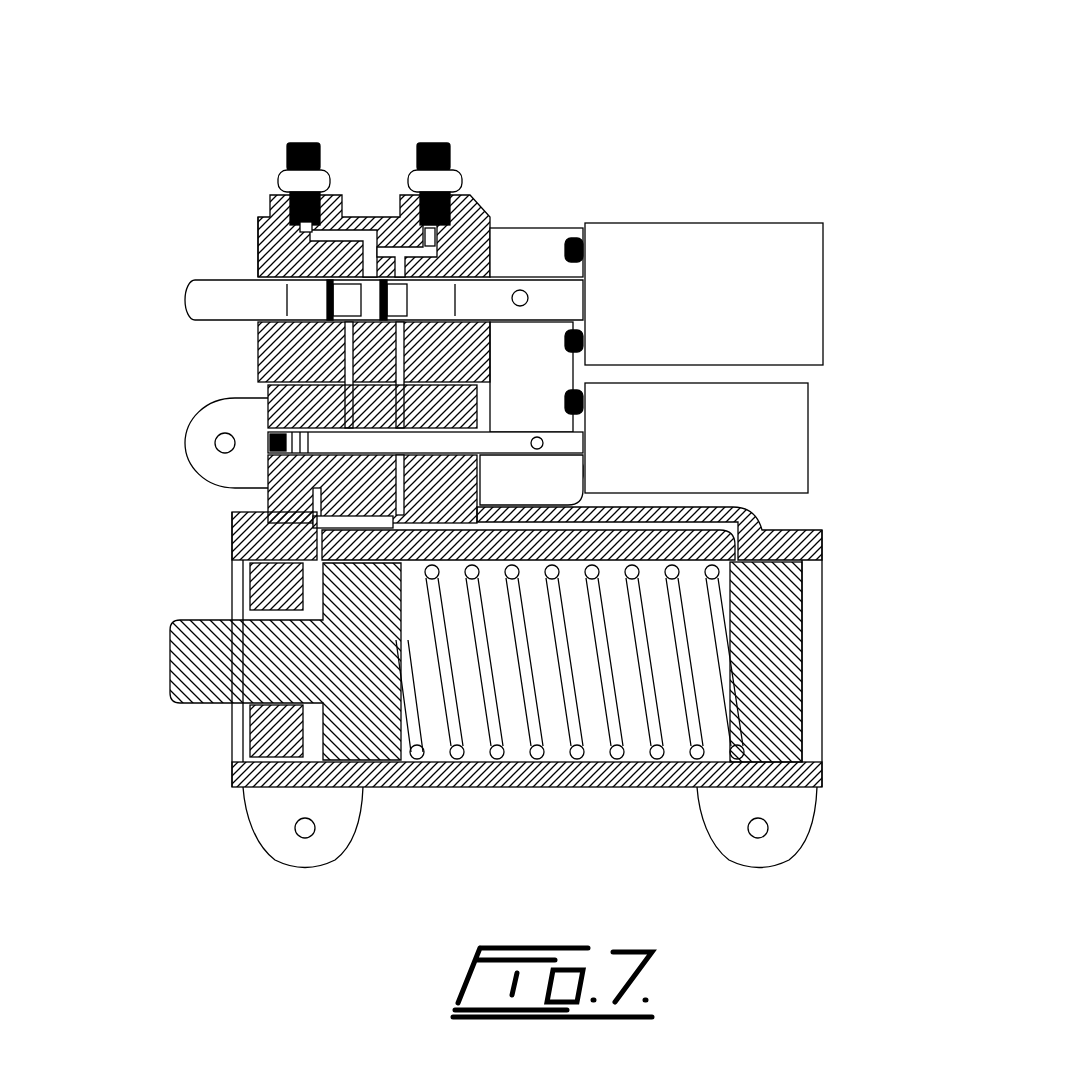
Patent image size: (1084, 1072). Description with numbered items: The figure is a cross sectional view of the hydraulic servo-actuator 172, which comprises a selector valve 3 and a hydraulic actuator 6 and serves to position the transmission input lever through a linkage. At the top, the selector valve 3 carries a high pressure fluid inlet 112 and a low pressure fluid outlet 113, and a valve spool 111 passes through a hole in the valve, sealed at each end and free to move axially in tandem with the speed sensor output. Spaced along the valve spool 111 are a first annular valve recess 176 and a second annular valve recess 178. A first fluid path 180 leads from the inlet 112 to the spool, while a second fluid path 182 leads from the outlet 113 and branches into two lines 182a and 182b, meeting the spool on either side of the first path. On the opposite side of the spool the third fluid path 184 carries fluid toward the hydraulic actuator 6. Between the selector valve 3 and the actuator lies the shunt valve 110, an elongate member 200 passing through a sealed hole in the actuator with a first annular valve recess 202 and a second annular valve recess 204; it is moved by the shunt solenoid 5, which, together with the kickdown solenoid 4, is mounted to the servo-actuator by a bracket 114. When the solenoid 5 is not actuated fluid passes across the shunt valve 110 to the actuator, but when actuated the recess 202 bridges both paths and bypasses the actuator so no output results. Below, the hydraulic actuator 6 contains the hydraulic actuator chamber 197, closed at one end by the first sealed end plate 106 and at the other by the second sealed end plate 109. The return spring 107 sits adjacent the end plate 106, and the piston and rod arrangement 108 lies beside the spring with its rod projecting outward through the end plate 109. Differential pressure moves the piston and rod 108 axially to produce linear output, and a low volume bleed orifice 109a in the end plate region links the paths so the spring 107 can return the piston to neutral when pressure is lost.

The hydraulic servo-actuator 172 is at (600, 132).
The selector valve 3 is at (456, 230).
The kickdown solenoid 4 is at (826, 281).
The shunt solenoid 5 is at (810, 410).
The hydraulic actuator 6 is at (763, 522).
The first sealed end plate 106 is at (803, 657).
The return spring 107 is at (643, 773).
The piston and rod arrangement 108 is at (413, 770).
The second sealed end plate 109 is at (248, 600).
The low volume bleed orifice 109a is at (275, 521).
The shunt valve 110 is at (287, 440).
The valve spool 111 is at (260, 262).
The high pressure fluid inlet 112 is at (285, 178).
The low pressure fluid outlet 113 is at (420, 175).
The bracket 114 is at (565, 228).
The first annular valve recess 176 is at (340, 306).
The second annular valve recess 178 is at (536, 233).
The first fluid path 180 is at (300, 228).
The second fluid path 182 is at (420, 237).
The first branch line of second fluid path 182a is at (318, 262).
The second branch line of second fluid path 182b is at (437, 250).
The third fluid path 184 is at (350, 375).
The hydraulic actuator chamber 197 is at (703, 730).
The elongate member 200 is at (513, 440).
The first annular valve recess 202 is at (238, 447).
The second annular valve recess 204 is at (372, 440).